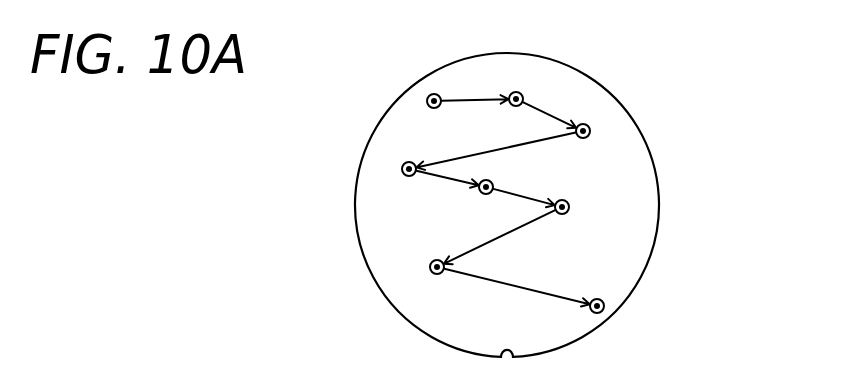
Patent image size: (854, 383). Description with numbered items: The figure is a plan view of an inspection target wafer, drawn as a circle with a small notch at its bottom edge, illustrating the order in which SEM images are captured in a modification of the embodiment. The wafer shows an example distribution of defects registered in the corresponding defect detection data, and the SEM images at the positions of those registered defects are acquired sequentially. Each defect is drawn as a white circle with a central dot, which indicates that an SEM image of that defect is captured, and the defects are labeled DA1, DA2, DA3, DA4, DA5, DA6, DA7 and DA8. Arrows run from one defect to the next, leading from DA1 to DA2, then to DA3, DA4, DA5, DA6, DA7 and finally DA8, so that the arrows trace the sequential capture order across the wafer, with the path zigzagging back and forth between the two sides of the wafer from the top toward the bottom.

The detection area 1 DA1 is at (433, 93).
The detection area 2 DA2 is at (521, 94).
The detection area 3 DA3 is at (588, 128).
The detection area 4 DA4 is at (403, 168).
The detection area 5 DA5 is at (492, 183).
The detection area 6 DA6 is at (569, 205).
The detection area 7 DA7 is at (430, 265).
The detection area 8 DA8 is at (604, 304).